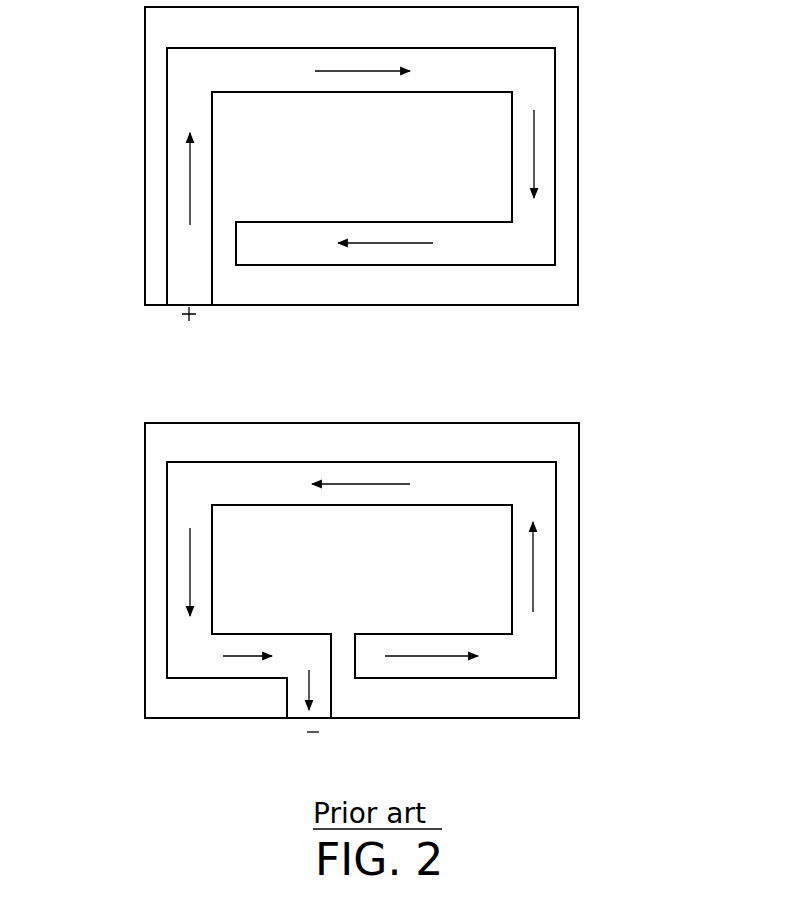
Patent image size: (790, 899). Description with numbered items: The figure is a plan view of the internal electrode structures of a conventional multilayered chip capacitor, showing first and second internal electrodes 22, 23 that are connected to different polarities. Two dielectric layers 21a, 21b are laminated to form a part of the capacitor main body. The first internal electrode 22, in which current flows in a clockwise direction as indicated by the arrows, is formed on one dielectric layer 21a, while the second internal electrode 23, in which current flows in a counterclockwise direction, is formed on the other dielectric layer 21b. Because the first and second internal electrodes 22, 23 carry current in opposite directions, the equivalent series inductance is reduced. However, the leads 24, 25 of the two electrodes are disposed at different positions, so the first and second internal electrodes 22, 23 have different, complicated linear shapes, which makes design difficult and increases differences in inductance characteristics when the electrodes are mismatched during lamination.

The dielectric layer 21a is at (578, 125).
The dielectric layer 21b is at (579, 566).
The first internal electrode 22 is at (178, 93).
The second internal electrode 23 is at (176, 545).
The lead 24 is at (177, 297).
The lead 25 is at (302, 715).